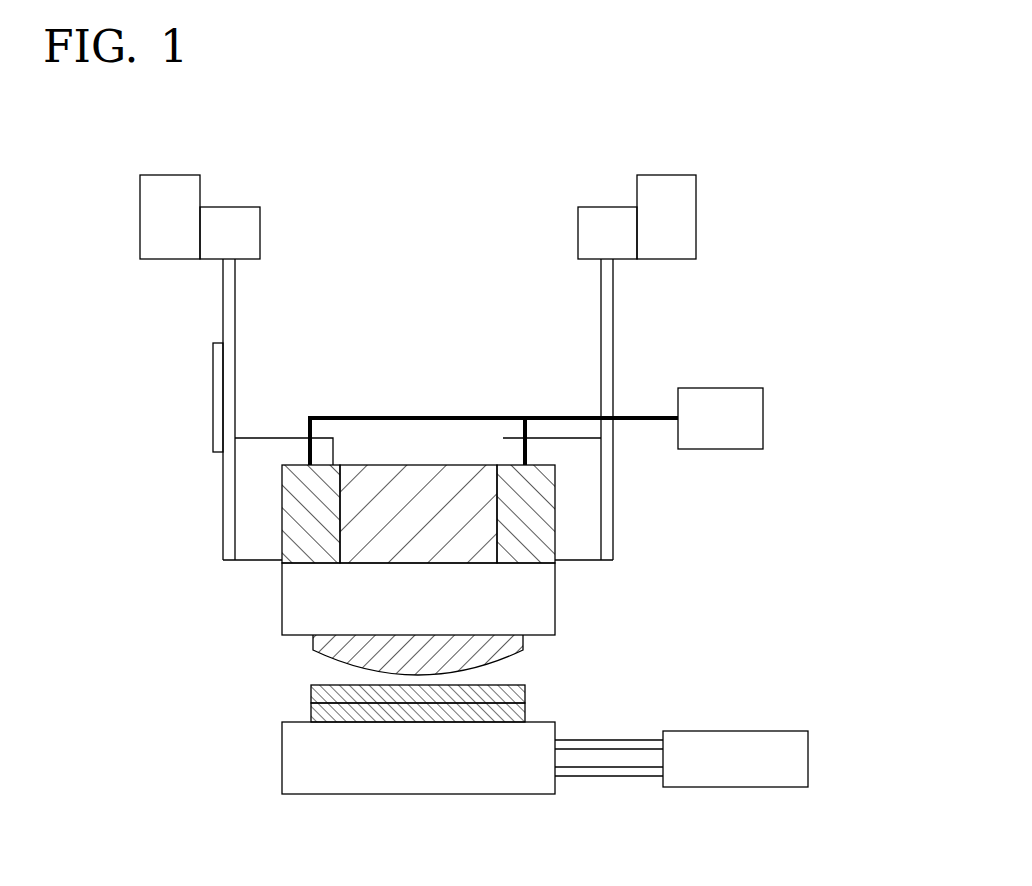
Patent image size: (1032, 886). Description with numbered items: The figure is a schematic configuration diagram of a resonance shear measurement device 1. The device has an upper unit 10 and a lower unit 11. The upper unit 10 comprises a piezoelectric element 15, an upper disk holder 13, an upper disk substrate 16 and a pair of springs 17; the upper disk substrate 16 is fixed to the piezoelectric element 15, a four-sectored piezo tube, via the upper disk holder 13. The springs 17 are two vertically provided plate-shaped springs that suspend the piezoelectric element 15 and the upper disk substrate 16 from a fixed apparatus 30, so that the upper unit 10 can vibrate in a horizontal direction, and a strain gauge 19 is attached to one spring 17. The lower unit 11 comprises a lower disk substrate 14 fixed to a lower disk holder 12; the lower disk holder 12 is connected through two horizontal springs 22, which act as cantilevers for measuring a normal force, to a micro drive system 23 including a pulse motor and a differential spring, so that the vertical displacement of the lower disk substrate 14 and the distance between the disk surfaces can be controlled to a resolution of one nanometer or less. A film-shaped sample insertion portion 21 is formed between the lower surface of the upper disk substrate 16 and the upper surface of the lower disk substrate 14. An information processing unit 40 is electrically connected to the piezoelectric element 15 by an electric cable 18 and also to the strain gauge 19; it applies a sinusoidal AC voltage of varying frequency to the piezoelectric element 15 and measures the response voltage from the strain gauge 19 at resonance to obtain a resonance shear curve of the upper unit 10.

The resonance shear measurement device 1 is at (803, 125).
The upper unit 10 is at (100, 298).
The lower unit 11 is at (150, 678).
The lower disk holder 12 is at (305, 758).
The upper disk holder 13 is at (310, 600).
The lower disk substrate 14 is at (310, 689).
The piezoelectric element 15 is at (310, 512).
The upper disk substrate 16 is at (350, 652).
The spring 17 is at (230, 295).
The electric cable 18 is at (645, 418).
The strain gauge 19 is at (218, 397).
The sample insertion portion 21 is at (420, 680).
The horizontal spring 22 is at (608, 772).
The micro drive system 23 is at (808, 755).
The fixed apparatus 30 is at (170, 174).
The information processing unit 40 is at (763, 417).